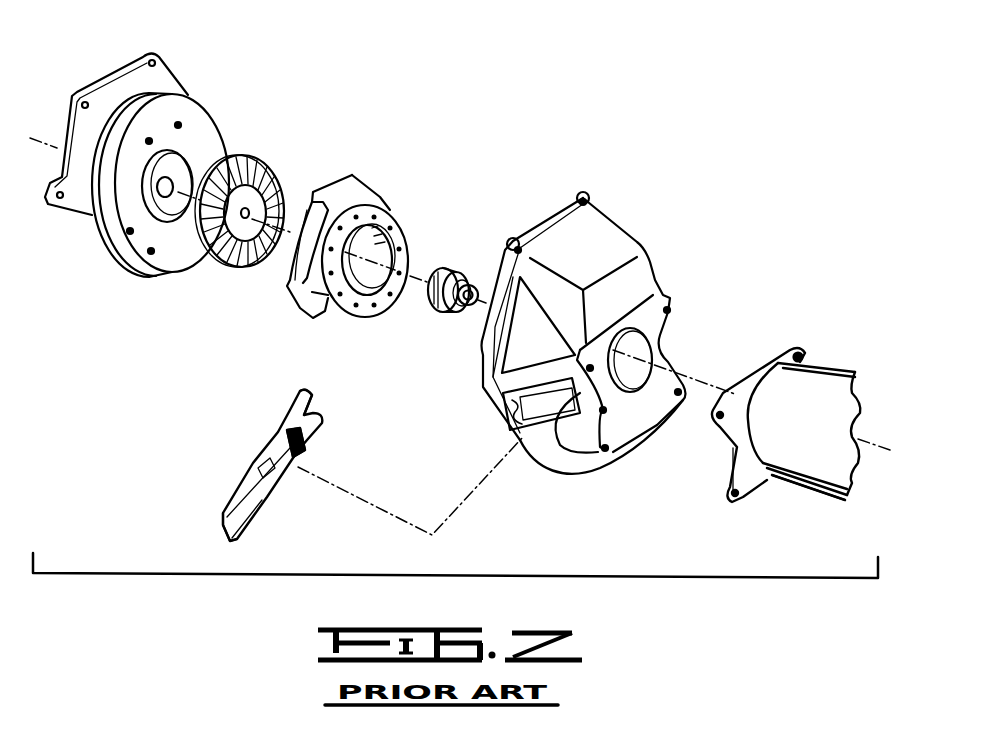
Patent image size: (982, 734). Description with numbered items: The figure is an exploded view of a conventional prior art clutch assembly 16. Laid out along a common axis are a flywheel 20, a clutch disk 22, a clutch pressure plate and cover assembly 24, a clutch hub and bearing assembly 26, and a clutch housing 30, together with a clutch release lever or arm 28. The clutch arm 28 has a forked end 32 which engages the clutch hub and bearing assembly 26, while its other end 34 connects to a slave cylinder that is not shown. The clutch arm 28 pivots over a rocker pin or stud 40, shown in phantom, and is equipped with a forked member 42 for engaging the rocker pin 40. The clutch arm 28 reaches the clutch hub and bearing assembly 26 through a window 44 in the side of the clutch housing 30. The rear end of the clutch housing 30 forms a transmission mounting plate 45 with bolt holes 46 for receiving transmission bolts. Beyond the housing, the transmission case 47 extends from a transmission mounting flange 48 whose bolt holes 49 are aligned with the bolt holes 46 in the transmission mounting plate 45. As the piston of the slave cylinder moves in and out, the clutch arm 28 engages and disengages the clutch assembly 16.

The clutch assembly 16 is at (369, 104).
The flywheel 20 is at (217, 108).
The clutch disk 22 is at (260, 157).
The clutch pressure plate and cover assembly 24 is at (382, 190).
The clutch hub and bearing assembly 26 is at (440, 265).
The clutch release lever or arm 28 is at (258, 468).
The clutch housing 30 is at (650, 262).
The forked end 32 is at (299, 390).
The other end 34 is at (222, 527).
The rocker pin or stud 40 is at (610, 413).
The forked member 42 is at (287, 477).
The window 44 is at (617, 464).
The transmission mounting plate 45 is at (668, 328).
The bolt holes 46 is at (580, 375).
The transmission case 47 is at (787, 472).
The transmission mounting flange 48 is at (760, 367).
The bolt holes 49 is at (800, 352).